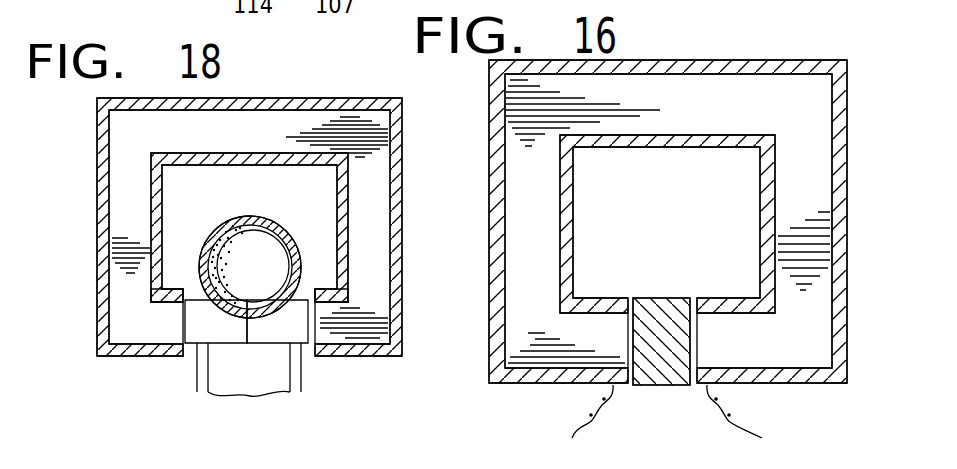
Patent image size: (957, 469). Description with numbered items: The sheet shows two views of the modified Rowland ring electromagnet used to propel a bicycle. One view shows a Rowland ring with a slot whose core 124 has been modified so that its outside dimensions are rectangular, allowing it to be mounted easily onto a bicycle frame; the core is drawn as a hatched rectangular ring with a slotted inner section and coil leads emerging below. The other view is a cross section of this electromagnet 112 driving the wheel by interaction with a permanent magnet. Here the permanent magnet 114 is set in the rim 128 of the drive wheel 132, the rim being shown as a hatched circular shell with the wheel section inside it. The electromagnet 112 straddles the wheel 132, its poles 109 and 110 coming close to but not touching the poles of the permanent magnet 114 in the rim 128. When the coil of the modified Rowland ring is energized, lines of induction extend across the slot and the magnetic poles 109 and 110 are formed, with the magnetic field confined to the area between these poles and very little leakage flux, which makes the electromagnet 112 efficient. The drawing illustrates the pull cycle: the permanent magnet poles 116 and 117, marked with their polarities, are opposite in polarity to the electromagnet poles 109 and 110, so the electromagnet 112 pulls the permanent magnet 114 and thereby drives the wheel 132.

In FIG. 18, the electromagnet 112 is at (253, 127).
In FIG. 18, the magnetic pole 109 is at (181, 303).
In FIG. 18, the magnetic pole 110 is at (313, 303).
In FIG. 18, the permanent magnet pole 116 is at (185, 345).
In FIG. 18, the permanent magnet pole 117 is at (310, 345).
In FIG. 18, the rim 128 is at (268, 318).
In FIG. 18, the drive wheel 132 is at (254, 280).
In FIG. 18, the permanent magnet 114 is at (258, 337).
In FIG. 16, the core 124 is at (680, 92).